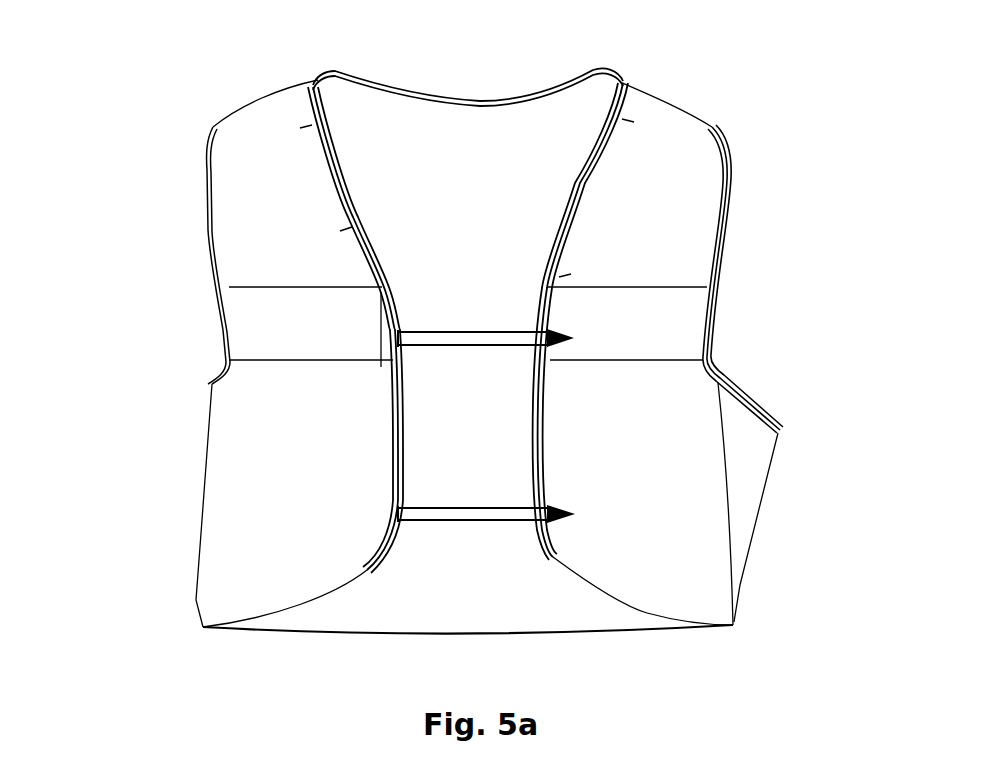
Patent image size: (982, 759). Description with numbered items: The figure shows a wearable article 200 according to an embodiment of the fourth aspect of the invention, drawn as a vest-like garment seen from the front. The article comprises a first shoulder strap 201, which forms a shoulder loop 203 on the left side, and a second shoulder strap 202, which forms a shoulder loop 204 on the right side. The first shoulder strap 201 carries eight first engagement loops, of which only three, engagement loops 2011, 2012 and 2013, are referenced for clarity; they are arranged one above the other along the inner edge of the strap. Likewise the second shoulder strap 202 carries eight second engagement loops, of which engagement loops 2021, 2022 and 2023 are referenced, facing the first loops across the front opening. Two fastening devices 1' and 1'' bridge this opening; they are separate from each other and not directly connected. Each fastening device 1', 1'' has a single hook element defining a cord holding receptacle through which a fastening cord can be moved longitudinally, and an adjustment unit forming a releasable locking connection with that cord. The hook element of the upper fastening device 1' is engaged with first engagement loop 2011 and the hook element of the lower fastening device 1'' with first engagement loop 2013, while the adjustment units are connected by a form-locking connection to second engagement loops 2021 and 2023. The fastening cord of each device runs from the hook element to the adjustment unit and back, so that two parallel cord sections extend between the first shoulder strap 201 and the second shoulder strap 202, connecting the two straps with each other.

The wearable article 200 is at (186, 87).
The first shoulder strap 201 is at (240, 175).
The second shoulder strap 202 is at (682, 163).
The shoulder loop 203 is at (210, 213).
The shoulder loop 204 is at (730, 203).
The first engagement loop 2011 is at (387, 333).
The first engagement loop 2012 is at (390, 370).
The first engagement loop 2013 is at (387, 513).
The second engagement loop 2021 is at (537, 323).
The second engagement loop 2022 is at (547, 372).
The second engagement loop 2023 is at (537, 520).
The fastening device 1' is at (485, 286).
The fastening device 1'' is at (486, 463).